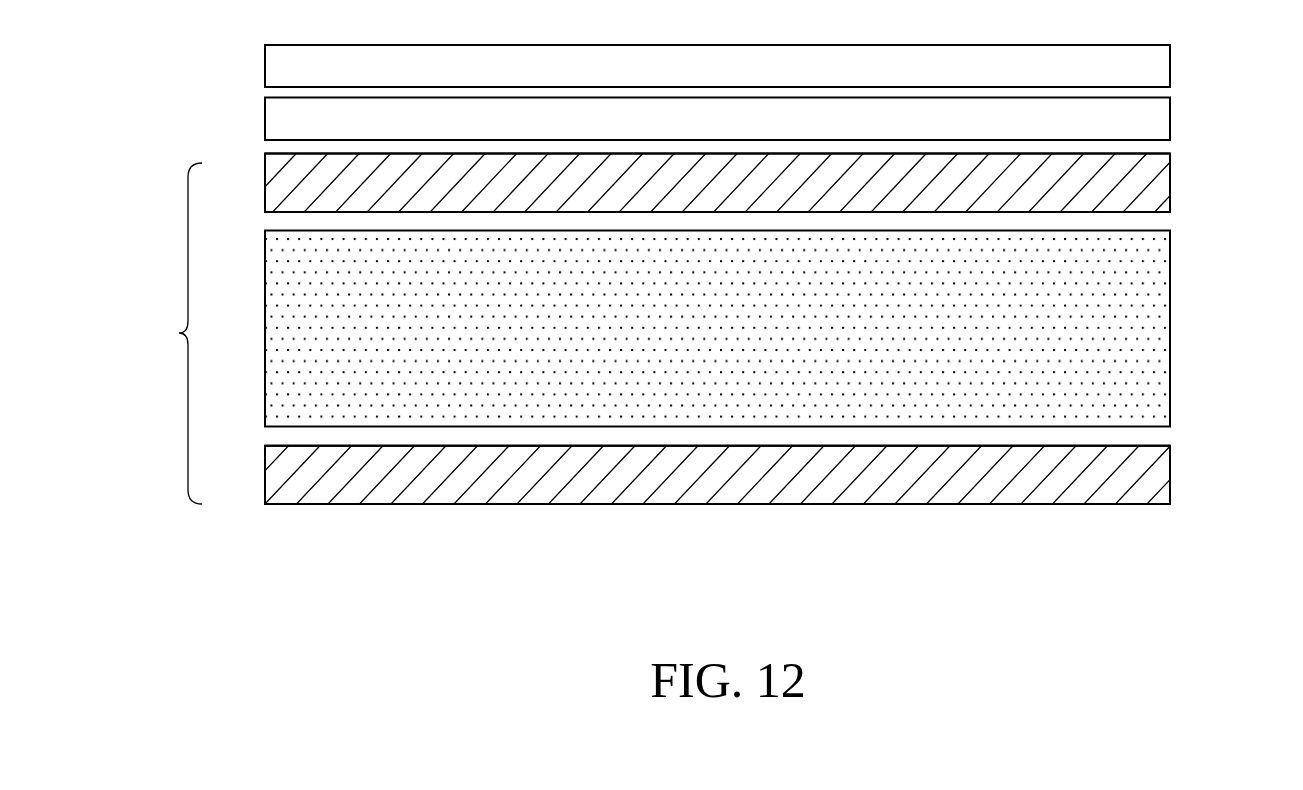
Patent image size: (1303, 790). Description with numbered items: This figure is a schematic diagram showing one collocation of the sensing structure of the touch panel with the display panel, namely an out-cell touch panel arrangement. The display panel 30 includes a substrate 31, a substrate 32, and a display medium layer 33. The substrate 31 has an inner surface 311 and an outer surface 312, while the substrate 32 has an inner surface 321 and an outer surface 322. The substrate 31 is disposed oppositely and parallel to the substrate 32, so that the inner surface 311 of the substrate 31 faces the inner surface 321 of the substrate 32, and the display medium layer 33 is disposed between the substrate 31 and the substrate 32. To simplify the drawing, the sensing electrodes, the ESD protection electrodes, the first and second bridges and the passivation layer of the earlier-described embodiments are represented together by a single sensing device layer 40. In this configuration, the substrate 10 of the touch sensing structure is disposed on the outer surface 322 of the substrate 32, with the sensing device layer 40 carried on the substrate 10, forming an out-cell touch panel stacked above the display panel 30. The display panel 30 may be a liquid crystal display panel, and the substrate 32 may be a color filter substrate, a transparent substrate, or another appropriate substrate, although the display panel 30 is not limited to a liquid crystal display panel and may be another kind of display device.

The substrate 10 is at (696, 130).
The sensing device layer 40 is at (696, 78).
The display panel 30 is at (179, 333).
The substrate 31 is at (275, 483).
The inner surface 311 is at (1137, 445).
The outer surface 312 is at (1118, 505).
The substrate 32 is at (275, 186).
The inner surface 321 is at (1137, 212).
The outer surface 322 is at (1137, 153).
The display medium layer 33 is at (275, 328).